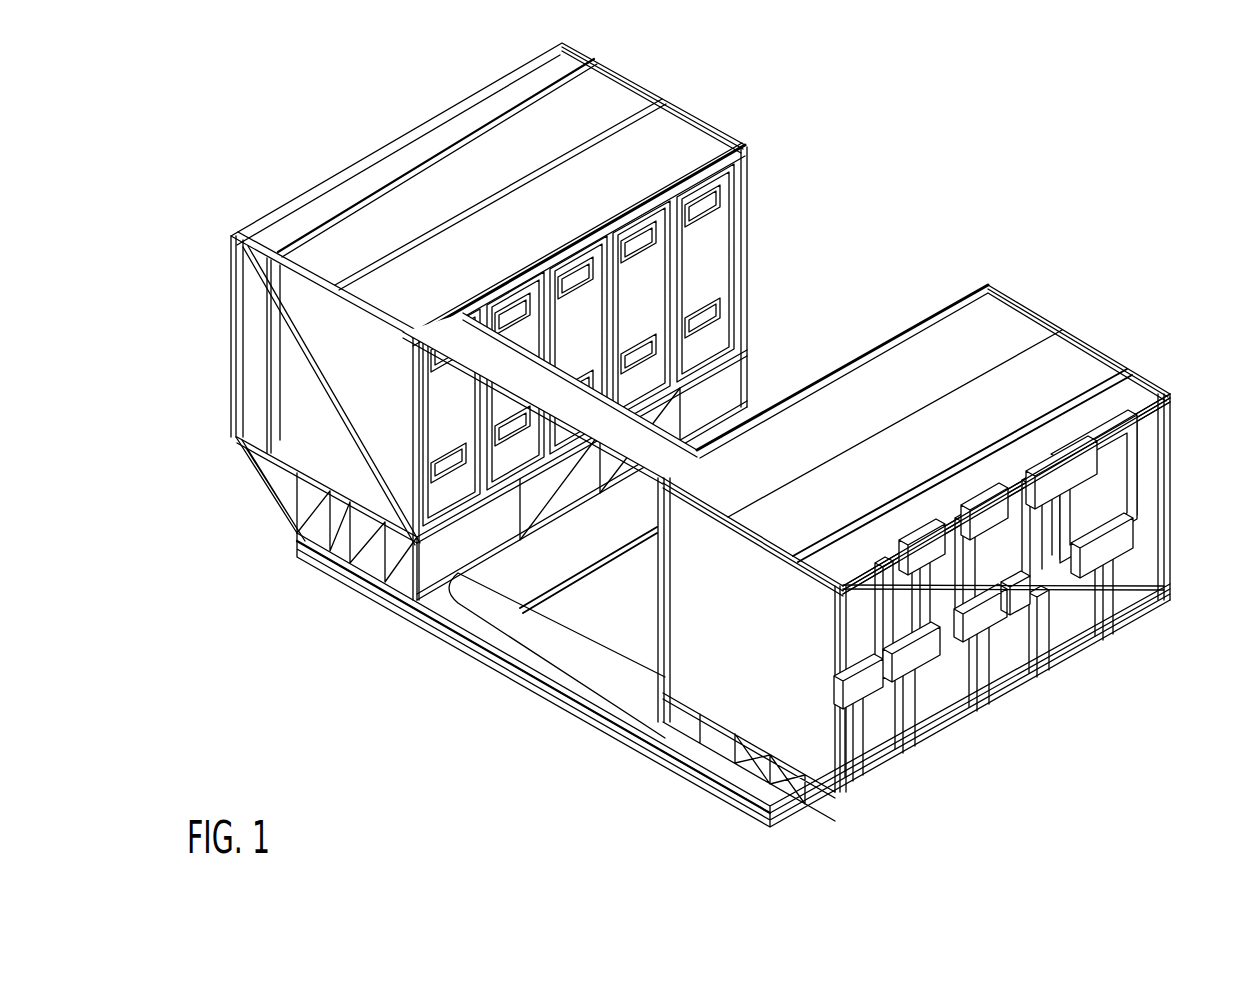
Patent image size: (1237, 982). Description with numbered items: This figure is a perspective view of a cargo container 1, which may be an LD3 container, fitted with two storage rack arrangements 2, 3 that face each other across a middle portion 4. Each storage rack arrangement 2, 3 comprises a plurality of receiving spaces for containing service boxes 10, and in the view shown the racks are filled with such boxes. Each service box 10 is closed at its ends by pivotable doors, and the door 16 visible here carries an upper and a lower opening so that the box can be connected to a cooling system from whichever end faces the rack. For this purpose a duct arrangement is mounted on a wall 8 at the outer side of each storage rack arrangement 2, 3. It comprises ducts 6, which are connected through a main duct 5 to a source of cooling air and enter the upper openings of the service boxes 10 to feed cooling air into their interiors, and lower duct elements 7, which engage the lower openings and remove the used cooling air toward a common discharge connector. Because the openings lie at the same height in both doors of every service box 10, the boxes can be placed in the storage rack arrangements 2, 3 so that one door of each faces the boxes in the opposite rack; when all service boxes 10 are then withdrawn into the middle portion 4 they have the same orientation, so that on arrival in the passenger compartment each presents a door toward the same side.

The container 1 is at (488, 749).
The storage rack arrangement 2 is at (289, 159).
The storage rack arrangement 3 is at (1036, 736).
The middle portion 4 is at (513, 583).
The main duct 5 is at (962, 690).
The duct 6 is at (1117, 497).
The lower duct element 7 is at (1117, 570).
The wall 8 is at (270, 358).
The service box 10 is at (303, 444).
The door 16 is at (447, 407).